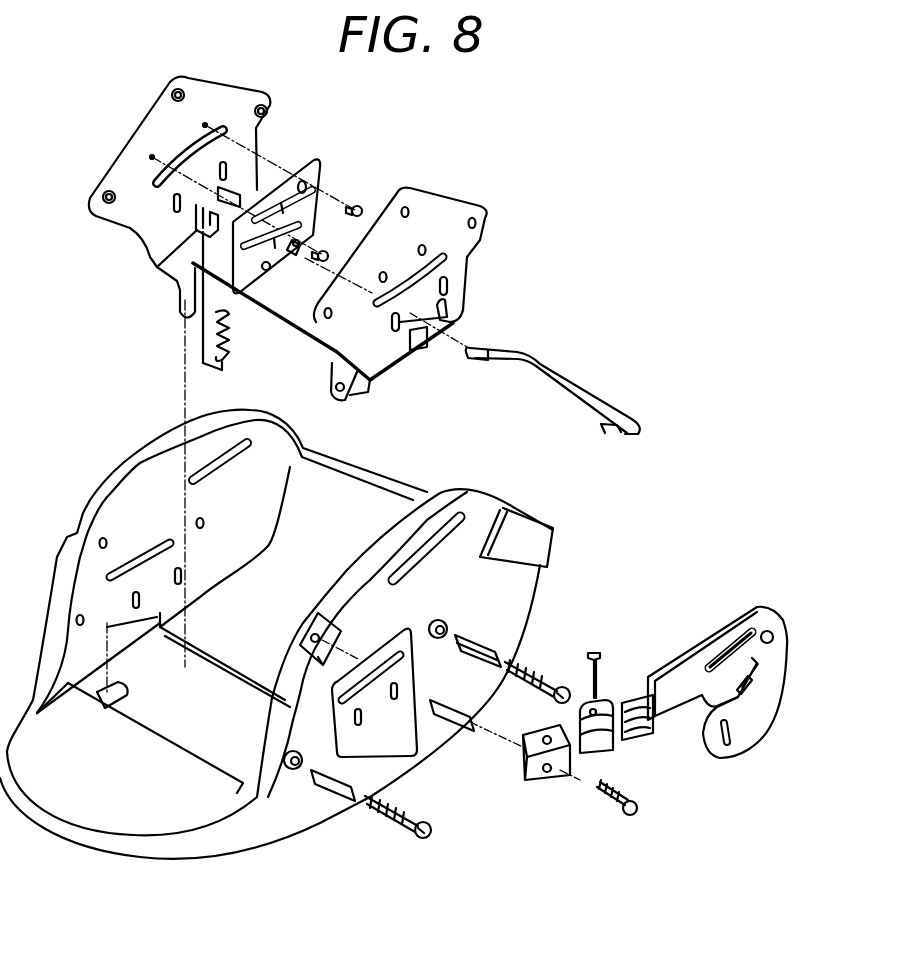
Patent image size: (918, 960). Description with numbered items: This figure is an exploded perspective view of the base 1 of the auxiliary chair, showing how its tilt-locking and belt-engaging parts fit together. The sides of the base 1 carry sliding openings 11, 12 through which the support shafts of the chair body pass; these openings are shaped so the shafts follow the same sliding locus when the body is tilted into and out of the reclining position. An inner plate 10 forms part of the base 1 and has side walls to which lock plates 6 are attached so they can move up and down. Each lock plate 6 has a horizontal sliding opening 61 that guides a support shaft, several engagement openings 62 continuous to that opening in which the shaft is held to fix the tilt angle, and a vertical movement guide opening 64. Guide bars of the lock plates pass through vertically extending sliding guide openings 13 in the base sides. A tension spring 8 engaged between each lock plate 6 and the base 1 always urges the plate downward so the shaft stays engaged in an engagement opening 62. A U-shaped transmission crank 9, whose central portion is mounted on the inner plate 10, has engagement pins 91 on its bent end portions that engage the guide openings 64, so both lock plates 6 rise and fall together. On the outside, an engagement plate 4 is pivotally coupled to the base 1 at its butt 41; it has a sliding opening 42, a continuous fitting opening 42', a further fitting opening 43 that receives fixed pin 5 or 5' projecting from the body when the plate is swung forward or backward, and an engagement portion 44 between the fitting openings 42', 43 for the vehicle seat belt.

The base 1 is at (196, 870).
The engagement plate 4 is at (675, 660).
The fixed pin 5 is at (499, 661).
The fixed pin 5' is at (379, 797).
The lock plate 6 is at (291, 167).
The tension spring 8 is at (207, 340).
The transmission crank 9 is at (583, 388).
The inner plate 10 is at (150, 262).
The sliding opening 11 is at (237, 463).
The sliding opening 12 is at (142, 558).
The sliding guide opening 13 is at (140, 600).
The butt 41 is at (632, 703).
The sliding opening 42 is at (727, 624).
The fitting opening 42' is at (790, 606).
The fitting opening 43 is at (733, 747).
The engagement portion 44 is at (757, 683).
The sliding opening 61 is at (268, 262).
The engagement opening 62 is at (322, 188).
The vertical movement guide opening 64 is at (298, 250).
The engagement pin 91 is at (467, 349).